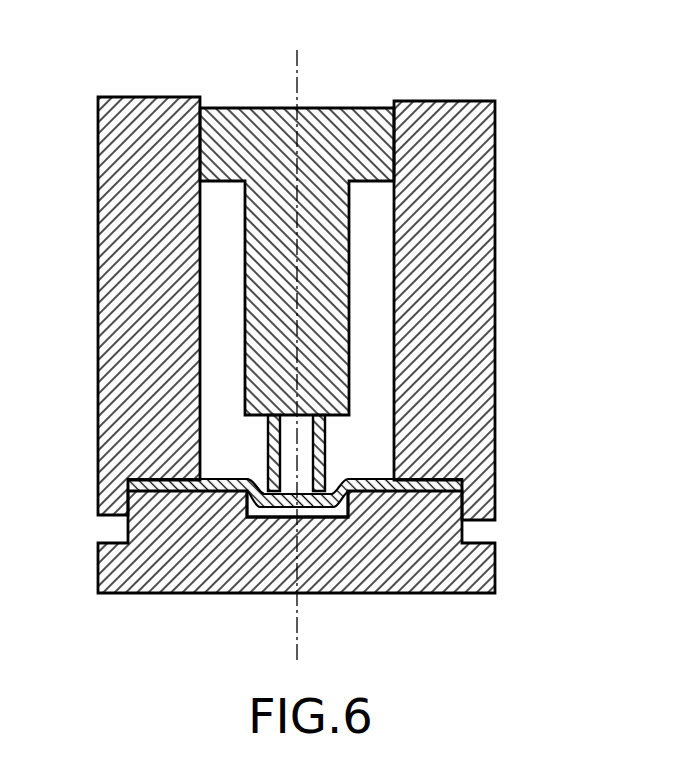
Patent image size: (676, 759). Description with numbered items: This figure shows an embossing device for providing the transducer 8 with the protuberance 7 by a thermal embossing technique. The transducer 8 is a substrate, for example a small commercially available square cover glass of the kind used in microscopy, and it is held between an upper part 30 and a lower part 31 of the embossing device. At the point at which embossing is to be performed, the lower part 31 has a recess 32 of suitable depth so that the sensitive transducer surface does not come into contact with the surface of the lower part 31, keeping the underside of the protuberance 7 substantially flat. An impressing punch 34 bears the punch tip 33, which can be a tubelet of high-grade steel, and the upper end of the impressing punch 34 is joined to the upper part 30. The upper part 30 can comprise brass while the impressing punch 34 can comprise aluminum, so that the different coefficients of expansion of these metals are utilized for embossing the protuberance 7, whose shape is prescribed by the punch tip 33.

The protuberance 7 is at (276, 493).
The transducer 8 is at (126, 484).
The upper part 30 is at (470, 428).
The lower part 31 is at (468, 563).
The recess 32 is at (340, 507).
The punch tip 33 is at (325, 437).
The impressing punch 34 is at (340, 128).